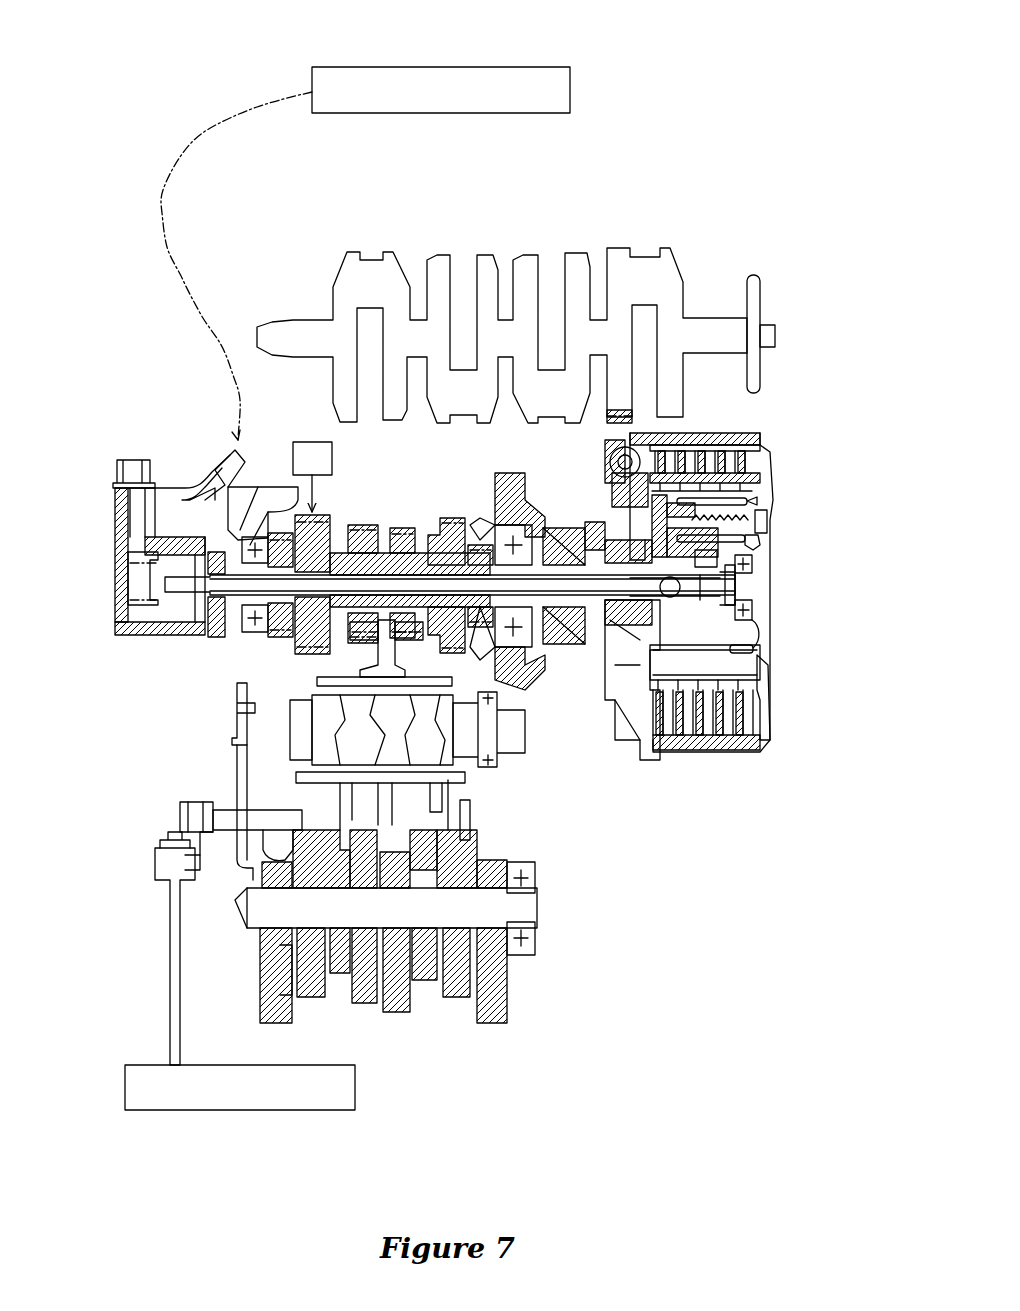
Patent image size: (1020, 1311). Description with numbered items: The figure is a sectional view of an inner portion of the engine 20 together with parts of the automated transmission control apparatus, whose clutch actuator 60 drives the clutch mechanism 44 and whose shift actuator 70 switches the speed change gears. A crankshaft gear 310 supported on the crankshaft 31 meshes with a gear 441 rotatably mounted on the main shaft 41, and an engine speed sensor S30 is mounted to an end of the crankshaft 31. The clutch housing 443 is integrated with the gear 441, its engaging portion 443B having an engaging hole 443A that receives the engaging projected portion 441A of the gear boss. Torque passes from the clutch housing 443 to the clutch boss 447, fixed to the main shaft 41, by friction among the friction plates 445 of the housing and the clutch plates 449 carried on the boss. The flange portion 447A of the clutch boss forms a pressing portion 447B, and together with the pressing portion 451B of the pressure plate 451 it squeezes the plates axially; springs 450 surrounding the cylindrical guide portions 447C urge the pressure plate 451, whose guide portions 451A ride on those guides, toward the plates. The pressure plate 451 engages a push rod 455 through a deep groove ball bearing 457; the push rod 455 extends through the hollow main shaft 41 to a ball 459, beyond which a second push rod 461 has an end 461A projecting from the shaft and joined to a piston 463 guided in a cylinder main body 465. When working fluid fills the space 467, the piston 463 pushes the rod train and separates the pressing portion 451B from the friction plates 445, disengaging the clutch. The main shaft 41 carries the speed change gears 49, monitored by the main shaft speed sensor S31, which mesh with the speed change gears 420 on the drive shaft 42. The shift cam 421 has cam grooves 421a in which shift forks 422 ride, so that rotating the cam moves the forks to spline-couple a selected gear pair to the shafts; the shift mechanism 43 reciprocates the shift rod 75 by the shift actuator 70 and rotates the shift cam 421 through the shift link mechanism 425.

The engine 20 is at (541, 286).
The crankshaft 31 is at (572, 250).
The crankshaft gear 310 is at (632, 412).
The engine speed sensor S30 is at (756, 282).
The main shaft speed sensor S31 is at (332, 455).
The clutch actuator 60 is at (520, 67).
The shift actuator 70 is at (325, 1110).
The shift rod 75 is at (170, 890).
The main shaft 41 is at (478, 540).
The drive shaft 42 is at (528, 908).
The shift mechanism 43 is at (458, 926).
The clutch mechanism 44 is at (726, 586).
The speed change gears 49 is at (423, 518).
The speed change gears 420 is at (510, 850).
The shift cam 421 is at (410, 721).
The cam grooves 421a is at (440, 712).
The shift forks 422 is at (385, 648).
The shift link mechanism 425 is at (170, 812).
The gear 441 is at (610, 458).
The engaging projected portion 441A is at (630, 530).
The clutch housing 443 is at (702, 432).
The engaging hole 443A is at (626, 512).
The engaging portion 443B is at (600, 500).
The friction plates 445 is at (770, 440).
The clutch boss 447 is at (726, 698).
The flange portion 447A is at (645, 755).
The pressing portion 447B is at (665, 750).
The guide portions 447C is at (765, 690).
The clutch plates 449 is at (728, 446).
The springs 450 is at (770, 506).
The pressure plate 451 is at (770, 466).
The guide portions 451A is at (762, 535).
The pressing portion 451B is at (765, 745).
The push rod 455 is at (740, 585).
The deep groove ball bearing 457 is at (760, 650).
The ball 459 is at (755, 607).
The push rod 461 is at (348, 525).
The end of push rod 461A is at (212, 548).
The piston 463 is at (255, 487).
The cylinder main body 465 is at (140, 635).
The space 467 is at (125, 575).